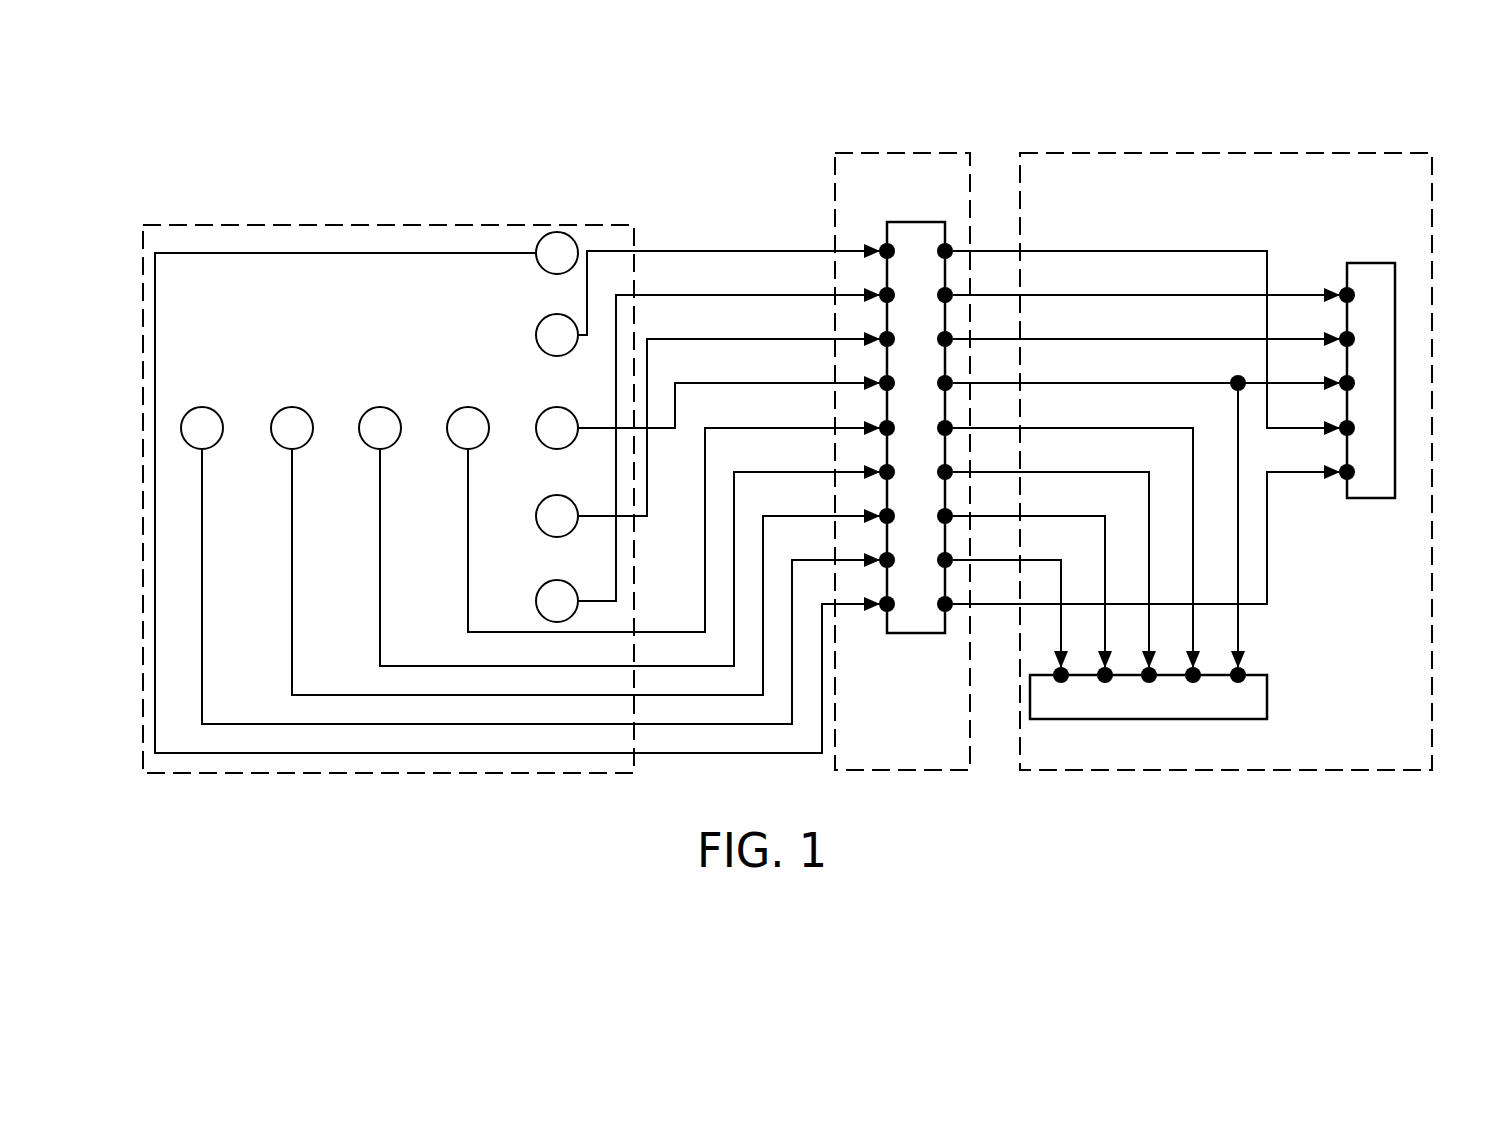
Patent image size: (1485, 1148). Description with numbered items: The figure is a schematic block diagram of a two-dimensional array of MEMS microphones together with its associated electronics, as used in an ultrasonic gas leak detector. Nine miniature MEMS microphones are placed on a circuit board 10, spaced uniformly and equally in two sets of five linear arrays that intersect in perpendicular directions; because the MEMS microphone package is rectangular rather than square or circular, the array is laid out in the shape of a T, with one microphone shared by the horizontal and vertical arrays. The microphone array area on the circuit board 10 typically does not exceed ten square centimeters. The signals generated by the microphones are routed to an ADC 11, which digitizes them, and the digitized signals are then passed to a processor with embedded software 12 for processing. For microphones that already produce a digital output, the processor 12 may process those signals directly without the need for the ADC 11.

The circuit board 10 is at (543, 225).
The ADC 11 is at (887, 153).
The processor with embedded software 12 is at (1070, 153).